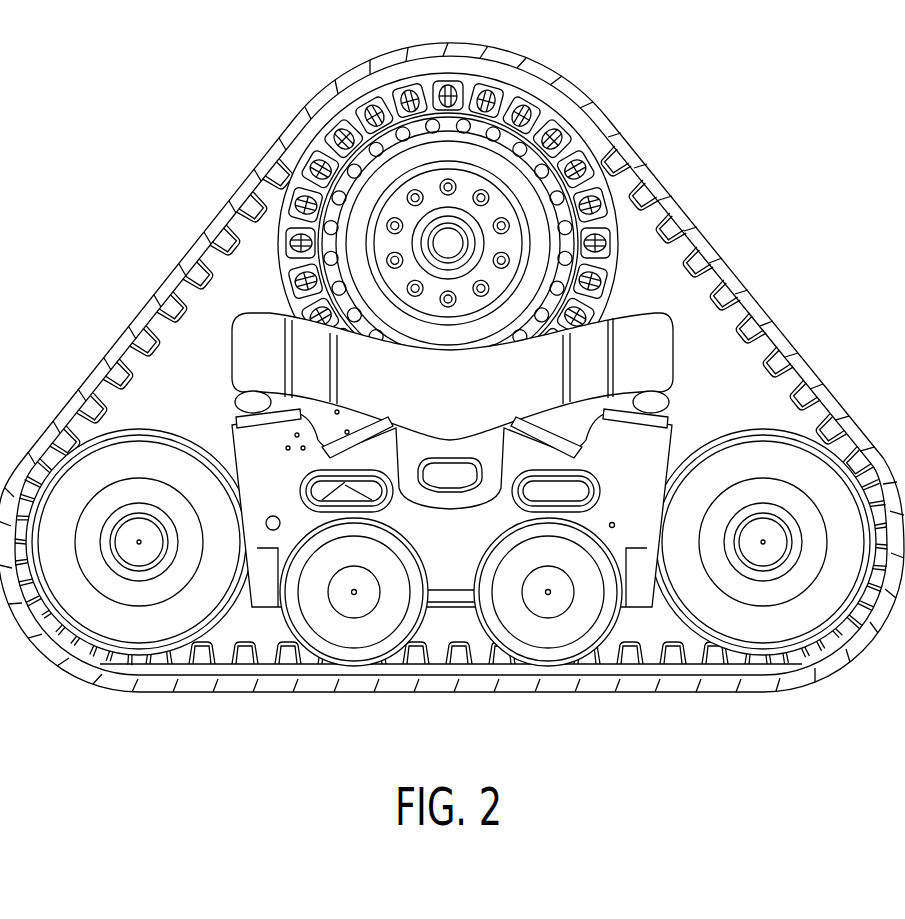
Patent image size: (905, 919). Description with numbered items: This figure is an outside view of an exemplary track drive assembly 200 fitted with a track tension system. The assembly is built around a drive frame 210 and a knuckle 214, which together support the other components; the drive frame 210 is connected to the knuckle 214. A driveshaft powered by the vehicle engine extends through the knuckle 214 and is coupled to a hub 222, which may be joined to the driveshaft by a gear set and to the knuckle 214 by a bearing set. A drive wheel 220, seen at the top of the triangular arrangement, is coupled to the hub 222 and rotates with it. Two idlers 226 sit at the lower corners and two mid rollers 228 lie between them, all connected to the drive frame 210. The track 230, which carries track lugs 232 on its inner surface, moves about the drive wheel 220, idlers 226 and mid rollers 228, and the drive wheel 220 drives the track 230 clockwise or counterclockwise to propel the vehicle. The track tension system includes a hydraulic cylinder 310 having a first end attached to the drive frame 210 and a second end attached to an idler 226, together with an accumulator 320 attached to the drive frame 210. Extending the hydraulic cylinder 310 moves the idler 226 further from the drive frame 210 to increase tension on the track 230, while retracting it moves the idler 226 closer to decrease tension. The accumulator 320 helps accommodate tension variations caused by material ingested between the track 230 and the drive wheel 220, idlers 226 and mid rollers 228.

The track drive assembly 200 is at (735, 152).
The drive frame 210 is at (205, 357).
The knuckle 214 is at (253, 327).
The drive wheel 220 is at (522, 152).
The hub 222 is at (445, 243).
The idlers 226 is at (118, 615).
The mid rollers 228 is at (342, 625).
The track 230 is at (762, 278).
The track lugs 232 is at (683, 282).
The hydraulic cylinder 310 is at (233, 447).
The accumulator 320 is at (676, 445).